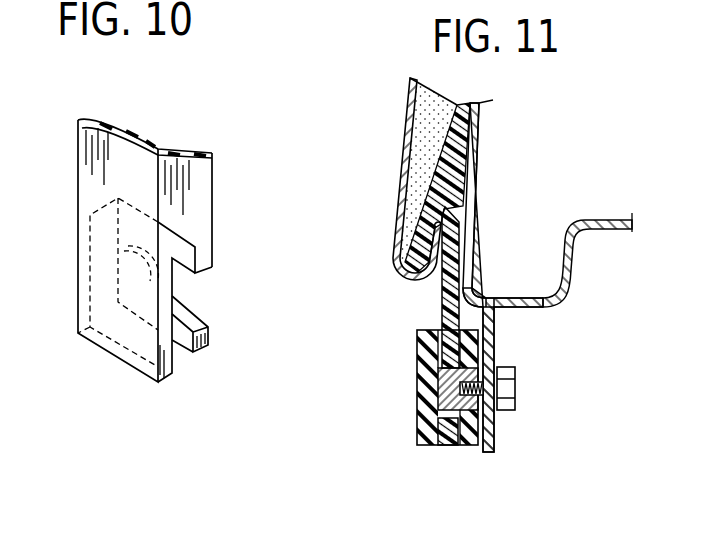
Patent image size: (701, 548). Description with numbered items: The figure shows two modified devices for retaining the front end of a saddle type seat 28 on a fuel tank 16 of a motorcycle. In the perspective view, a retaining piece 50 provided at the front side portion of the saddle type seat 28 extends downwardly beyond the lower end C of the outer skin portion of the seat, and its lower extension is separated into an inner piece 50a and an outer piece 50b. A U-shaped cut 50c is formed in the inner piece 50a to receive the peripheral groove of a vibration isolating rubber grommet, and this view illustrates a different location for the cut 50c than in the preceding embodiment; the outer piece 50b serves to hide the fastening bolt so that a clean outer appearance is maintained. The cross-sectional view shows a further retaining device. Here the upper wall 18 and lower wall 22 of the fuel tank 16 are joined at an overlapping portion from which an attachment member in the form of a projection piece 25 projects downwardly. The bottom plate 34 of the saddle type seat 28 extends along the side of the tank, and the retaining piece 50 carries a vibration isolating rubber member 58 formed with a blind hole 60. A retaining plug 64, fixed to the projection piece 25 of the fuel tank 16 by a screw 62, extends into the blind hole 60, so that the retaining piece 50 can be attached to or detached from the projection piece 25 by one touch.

In FIG. 11, the fuel tank 16 is at (484, 270).
In FIG. 11, the upper wall 18 is at (478, 208).
In FIG. 11, the lower wall 22 is at (566, 278).
In FIG. 11, the projection piece 25 is at (496, 438).
In FIG. 11, the saddle type seat 28 is at (389, 125).
In FIG. 11, the bottom plate 34 is at (462, 138).
In FIG. 10, the retaining piece 50 is at (184, 278).
In FIG. 11, the retaining piece 50 is at (448, 310).
In FIG. 10, the inner piece 50a is at (187, 353).
In FIG. 10, the outer piece 50b is at (117, 327).
In FIG. 10, the U-shaped cut 50c is at (196, 299).
In FIG. 11, the vibration isolating rubber member 58 is at (428, 432).
In FIG. 11, the blind hole 60 is at (437, 370).
In FIG. 11, the screw 62 is at (517, 388).
In FIG. 11, the retaining plug 64 is at (437, 392).
In FIG. 11, the lower end of the outer skin portion of the seat C is at (404, 287).